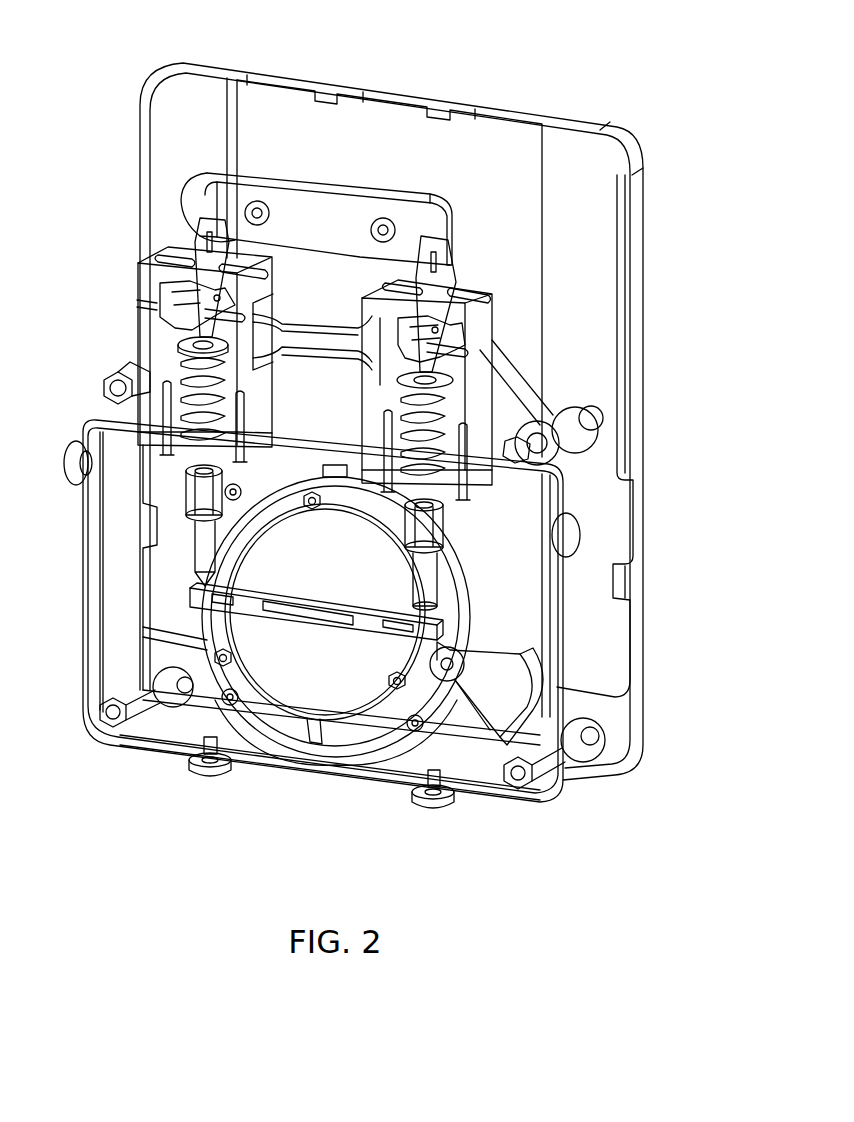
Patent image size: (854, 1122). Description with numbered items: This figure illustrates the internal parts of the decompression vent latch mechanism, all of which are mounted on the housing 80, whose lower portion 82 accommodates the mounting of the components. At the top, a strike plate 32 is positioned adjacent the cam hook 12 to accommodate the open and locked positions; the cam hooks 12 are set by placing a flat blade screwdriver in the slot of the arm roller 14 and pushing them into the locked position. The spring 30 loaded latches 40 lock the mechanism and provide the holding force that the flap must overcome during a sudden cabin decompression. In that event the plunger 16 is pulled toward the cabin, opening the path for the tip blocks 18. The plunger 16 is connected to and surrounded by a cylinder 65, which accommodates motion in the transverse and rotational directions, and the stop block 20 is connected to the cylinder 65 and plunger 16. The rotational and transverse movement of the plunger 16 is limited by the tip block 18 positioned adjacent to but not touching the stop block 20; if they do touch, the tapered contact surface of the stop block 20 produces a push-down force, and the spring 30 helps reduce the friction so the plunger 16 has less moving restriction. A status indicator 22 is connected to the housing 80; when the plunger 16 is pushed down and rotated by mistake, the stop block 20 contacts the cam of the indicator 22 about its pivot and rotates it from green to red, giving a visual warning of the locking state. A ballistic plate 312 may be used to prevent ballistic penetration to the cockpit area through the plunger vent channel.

The ballistic plate 312 is at (390, 145).
The lower portion 82 is at (560, 642).
The strike plate 32 is at (203, 190).
The cam hook 12 is at (203, 230).
The latch 40 is at (456, 288).
The arm roller 14 is at (170, 321).
The spring 30 is at (182, 365).
The housing 80 is at (480, 327).
The stop block 20 is at (193, 603).
The tip block 18 is at (428, 573).
The plunger 16 is at (300, 673).
The cylinder 65 is at (343, 727).
The status indicator 22 is at (490, 716).